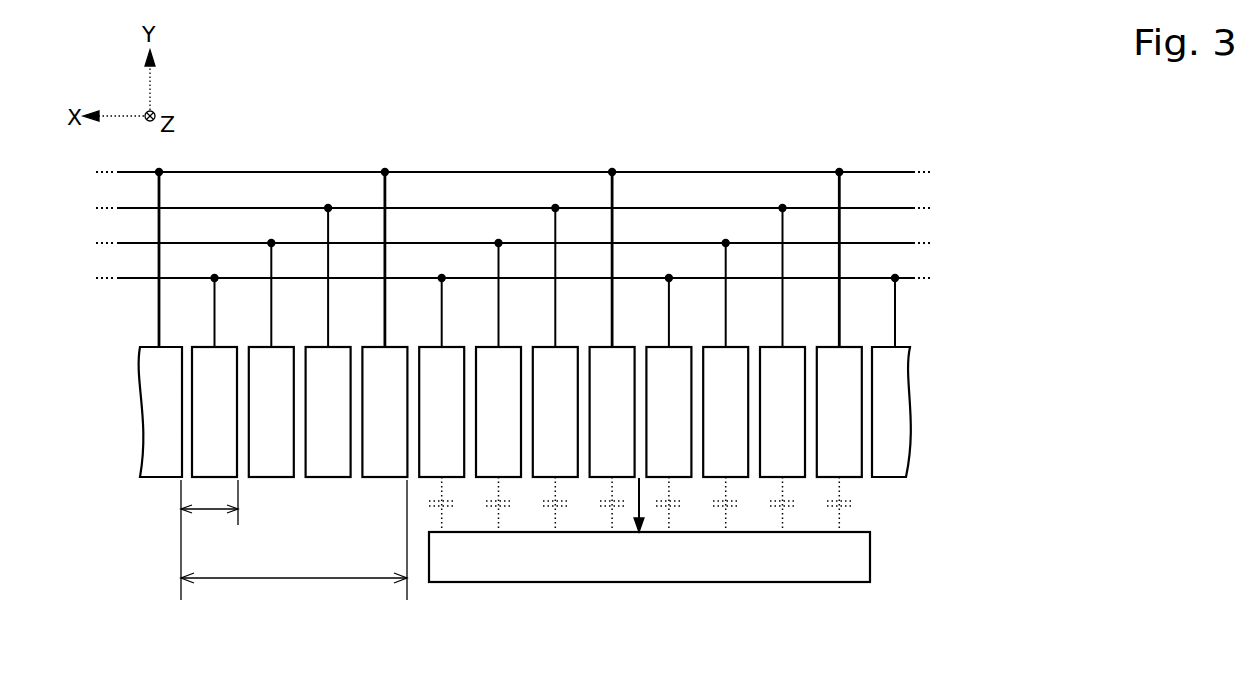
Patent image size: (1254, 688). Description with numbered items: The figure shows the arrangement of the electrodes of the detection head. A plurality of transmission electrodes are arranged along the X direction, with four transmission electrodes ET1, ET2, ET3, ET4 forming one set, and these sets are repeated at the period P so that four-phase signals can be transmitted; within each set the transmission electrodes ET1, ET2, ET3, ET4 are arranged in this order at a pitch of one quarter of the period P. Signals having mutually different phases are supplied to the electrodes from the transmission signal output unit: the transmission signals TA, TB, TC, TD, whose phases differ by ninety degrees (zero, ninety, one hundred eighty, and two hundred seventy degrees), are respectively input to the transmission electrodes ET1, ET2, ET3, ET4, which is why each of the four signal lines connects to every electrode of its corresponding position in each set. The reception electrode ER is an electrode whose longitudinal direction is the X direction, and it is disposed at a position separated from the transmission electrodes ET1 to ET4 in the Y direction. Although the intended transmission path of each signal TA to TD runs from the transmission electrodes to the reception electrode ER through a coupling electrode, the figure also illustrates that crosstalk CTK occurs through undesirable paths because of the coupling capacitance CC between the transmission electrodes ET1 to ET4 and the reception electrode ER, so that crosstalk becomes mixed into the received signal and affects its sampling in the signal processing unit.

The transmission signal (0°) TA is at (942, 172).
The transmission signal (90°) TB is at (942, 208).
The transmission signal (180°) TC is at (942, 243).
The transmission signal (270°) TD is at (942, 278).
The transmission electrode ET1 is at (611, 412).
The transmission electrode ET2 is at (555, 412).
The transmission electrode ET3 is at (498, 412).
The transmission electrode ET4 is at (441, 412).
The reception electrode ER is at (649, 557).
The coupling capacitance CC is at (872, 505).
The crosstalk CTK is at (632, 507).
The period P is at (294, 543).